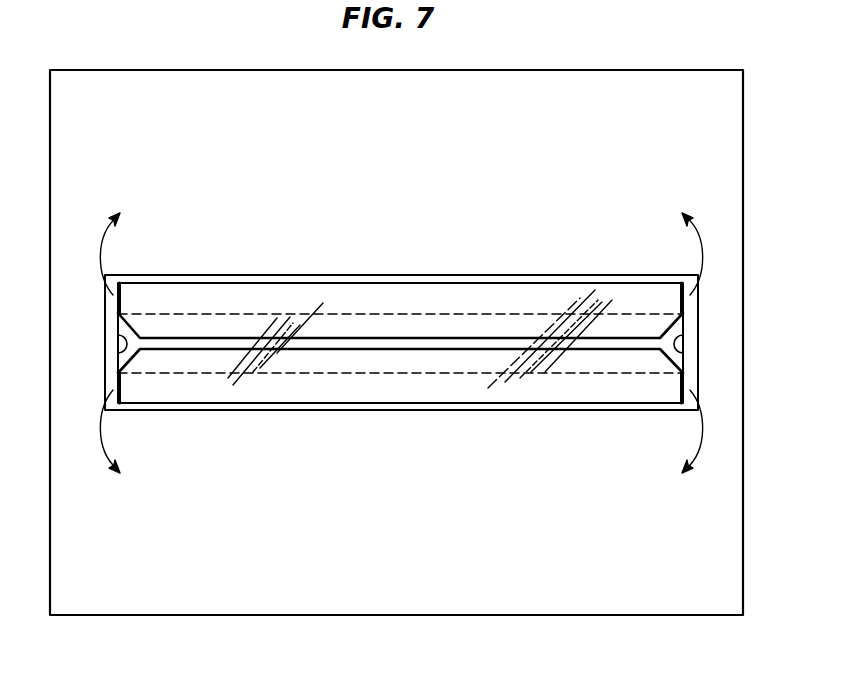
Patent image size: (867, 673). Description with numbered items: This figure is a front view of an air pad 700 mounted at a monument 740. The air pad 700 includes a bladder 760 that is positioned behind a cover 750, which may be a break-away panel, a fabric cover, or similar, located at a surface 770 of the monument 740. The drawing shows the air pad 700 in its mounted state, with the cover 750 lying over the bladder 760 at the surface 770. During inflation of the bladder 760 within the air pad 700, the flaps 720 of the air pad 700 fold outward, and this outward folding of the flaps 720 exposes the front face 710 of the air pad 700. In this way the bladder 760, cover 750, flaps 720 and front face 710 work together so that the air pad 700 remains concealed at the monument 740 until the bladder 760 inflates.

The air pad 700 is at (374, 440).
The front face 710 is at (343, 297).
The flaps 720 is at (533, 337).
The monument 740 is at (743, 170).
The cover 750 is at (482, 275).
The bladder 760 is at (243, 307).
The surface 770 is at (710, 573).